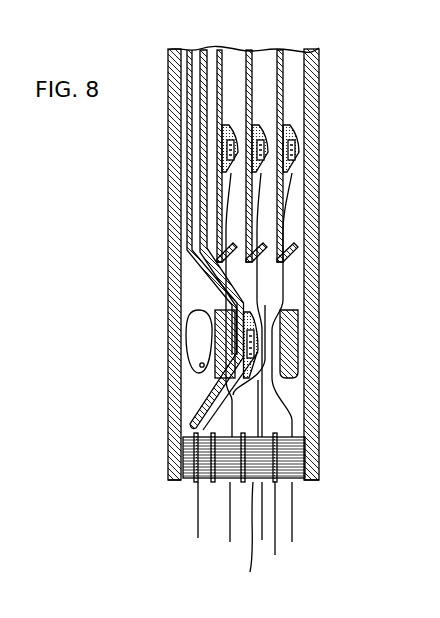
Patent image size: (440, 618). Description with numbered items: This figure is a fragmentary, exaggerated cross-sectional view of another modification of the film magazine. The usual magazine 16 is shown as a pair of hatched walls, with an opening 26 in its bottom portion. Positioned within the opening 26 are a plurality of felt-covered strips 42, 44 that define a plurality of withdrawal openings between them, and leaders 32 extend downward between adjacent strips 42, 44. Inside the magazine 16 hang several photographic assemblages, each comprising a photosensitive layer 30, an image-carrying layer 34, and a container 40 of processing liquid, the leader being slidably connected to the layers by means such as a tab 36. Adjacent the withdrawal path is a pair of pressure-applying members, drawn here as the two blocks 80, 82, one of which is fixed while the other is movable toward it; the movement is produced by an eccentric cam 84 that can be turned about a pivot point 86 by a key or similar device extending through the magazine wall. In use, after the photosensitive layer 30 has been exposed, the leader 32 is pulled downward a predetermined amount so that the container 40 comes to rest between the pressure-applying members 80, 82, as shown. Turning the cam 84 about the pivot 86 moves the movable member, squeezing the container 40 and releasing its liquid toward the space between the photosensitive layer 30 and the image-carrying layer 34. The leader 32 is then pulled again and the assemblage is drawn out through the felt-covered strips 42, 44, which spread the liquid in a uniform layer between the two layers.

The magazine 16 is at (313, 363).
The image-carrying layer 34 is at (190, 167).
The photosensitive layer 30 is at (200, 195).
The container 40 is at (288, 128).
The tab 36 is at (293, 235).
The eccentric cam 84 is at (198, 317).
The pivot point 86 is at (198, 357).
The left support block 82 is at (217, 376).
The right support block 80 is at (298, 313).
The felt-covered strip 44 is at (190, 483).
The leader 32 is at (198, 538).
The felt-covered strip 42 is at (275, 555).
The opening 26 is at (300, 487).